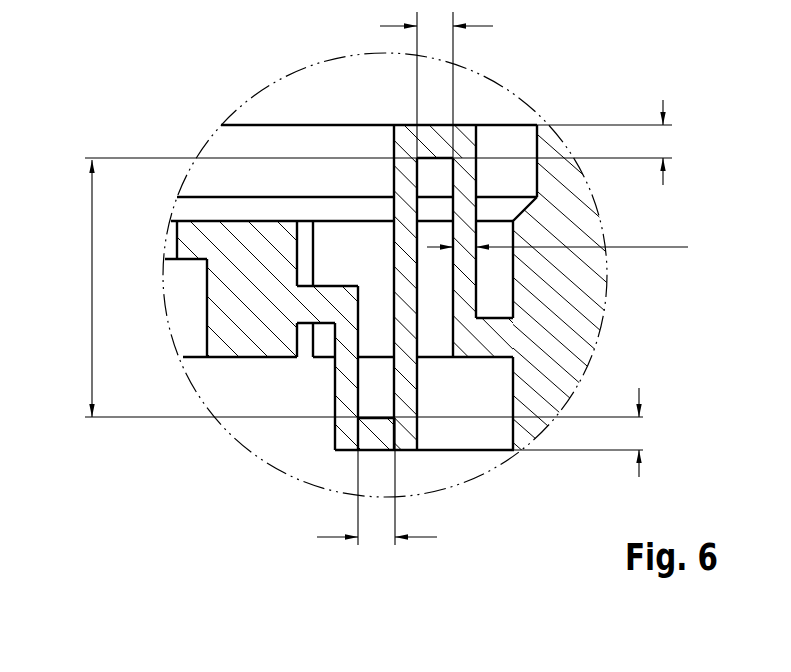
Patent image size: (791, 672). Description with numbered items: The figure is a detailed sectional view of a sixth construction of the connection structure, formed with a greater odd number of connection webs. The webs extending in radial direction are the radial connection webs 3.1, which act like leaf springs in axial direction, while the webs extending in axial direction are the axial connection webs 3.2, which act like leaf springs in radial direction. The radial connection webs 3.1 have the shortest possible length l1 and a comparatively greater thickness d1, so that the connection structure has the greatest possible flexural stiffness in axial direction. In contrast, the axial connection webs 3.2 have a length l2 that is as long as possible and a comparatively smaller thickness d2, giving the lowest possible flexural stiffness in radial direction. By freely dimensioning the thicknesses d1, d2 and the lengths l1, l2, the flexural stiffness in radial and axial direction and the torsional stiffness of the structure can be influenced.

The radial connection web 3.1 is at (408, 124).
The axial connection web 3.2 is at (407, 223).
The length of radial connection web l1 is at (405, 280).
The length of axial connection web l2 is at (371, 287).
The thickness of radial connection web d1 is at (596, 288).
The thickness of axial connection web d2 is at (571, 244).